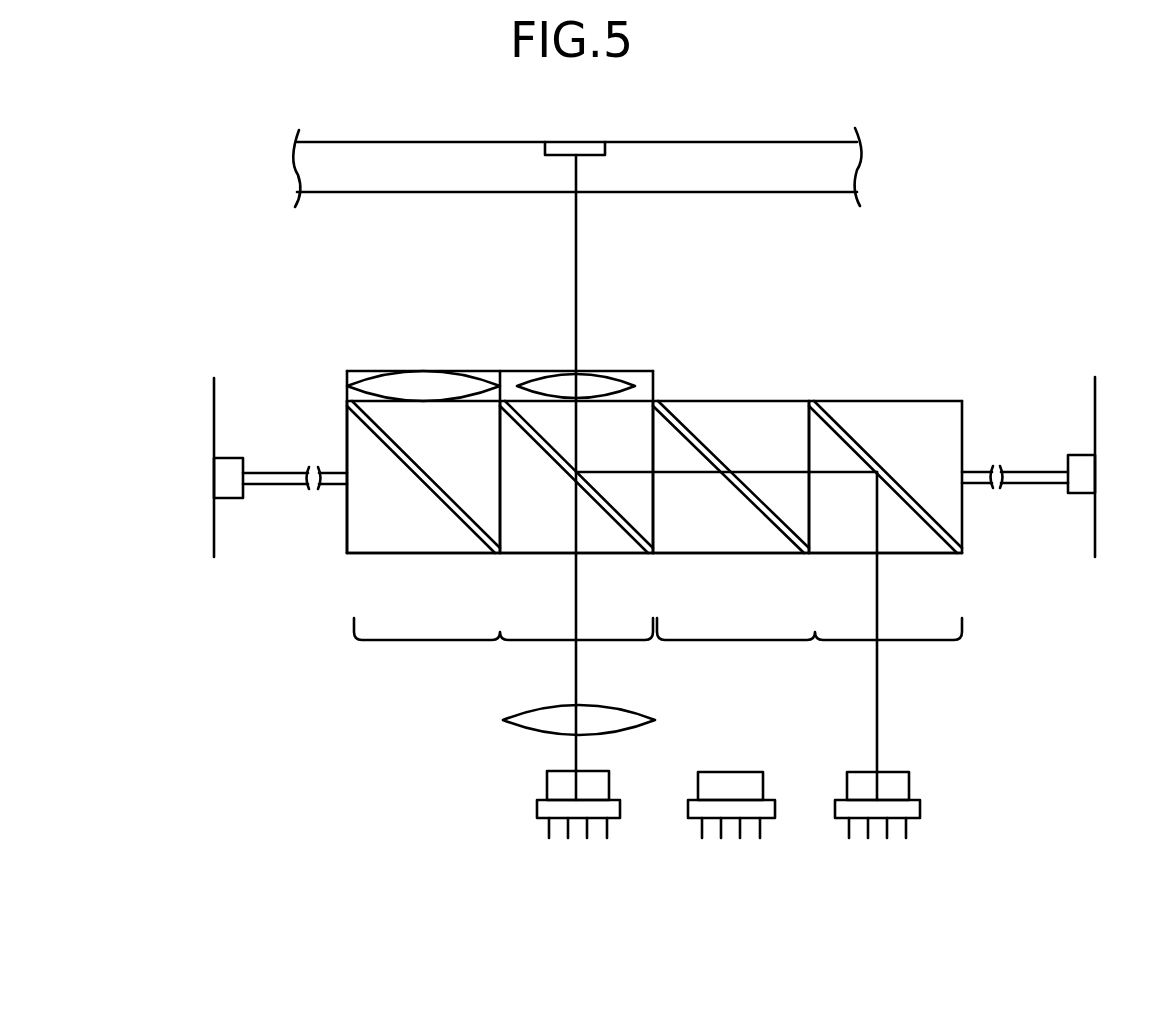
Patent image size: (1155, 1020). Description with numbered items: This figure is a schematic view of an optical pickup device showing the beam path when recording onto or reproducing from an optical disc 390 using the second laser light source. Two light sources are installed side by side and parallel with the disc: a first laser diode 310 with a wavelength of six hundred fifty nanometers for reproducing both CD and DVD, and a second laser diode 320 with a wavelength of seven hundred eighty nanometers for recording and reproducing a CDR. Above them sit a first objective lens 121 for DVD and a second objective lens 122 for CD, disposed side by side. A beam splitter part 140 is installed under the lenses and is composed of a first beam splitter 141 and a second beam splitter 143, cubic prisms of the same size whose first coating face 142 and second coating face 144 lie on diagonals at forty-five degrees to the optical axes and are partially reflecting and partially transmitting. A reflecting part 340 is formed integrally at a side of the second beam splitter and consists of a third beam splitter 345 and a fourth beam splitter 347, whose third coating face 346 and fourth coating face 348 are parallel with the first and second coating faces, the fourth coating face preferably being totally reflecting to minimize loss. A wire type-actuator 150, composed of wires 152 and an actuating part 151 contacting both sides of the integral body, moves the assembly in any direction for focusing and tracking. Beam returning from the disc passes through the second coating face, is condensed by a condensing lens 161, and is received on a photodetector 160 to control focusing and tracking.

The optical disc 390 is at (840, 157).
The beam splitter part 140 is at (500, 523).
The reflecting part 340 is at (807, 541).
The first objective lens 121 is at (421, 378).
The second objective lens 122 is at (590, 378).
The first beam splitter 141 is at (408, 545).
The first coating face 142 is at (428, 480).
The second beam splitter 143 is at (535, 545).
The second coating face 144 is at (552, 448).
The third beam splitter 345 is at (716, 542).
The third coating face 346 is at (705, 447).
The fourth beam splitter 347 is at (843, 542).
The fourth coating face 348 is at (860, 447).
The condensing lens 161 is at (505, 718).
The photodetector 160 is at (550, 806).
The first laser diode 310 is at (770, 818).
The second laser diode 320 is at (912, 812).
The wire type-actuator 150 is at (238, 548).
The actuating part 151 is at (200, 400).
The wires 152 is at (283, 488).